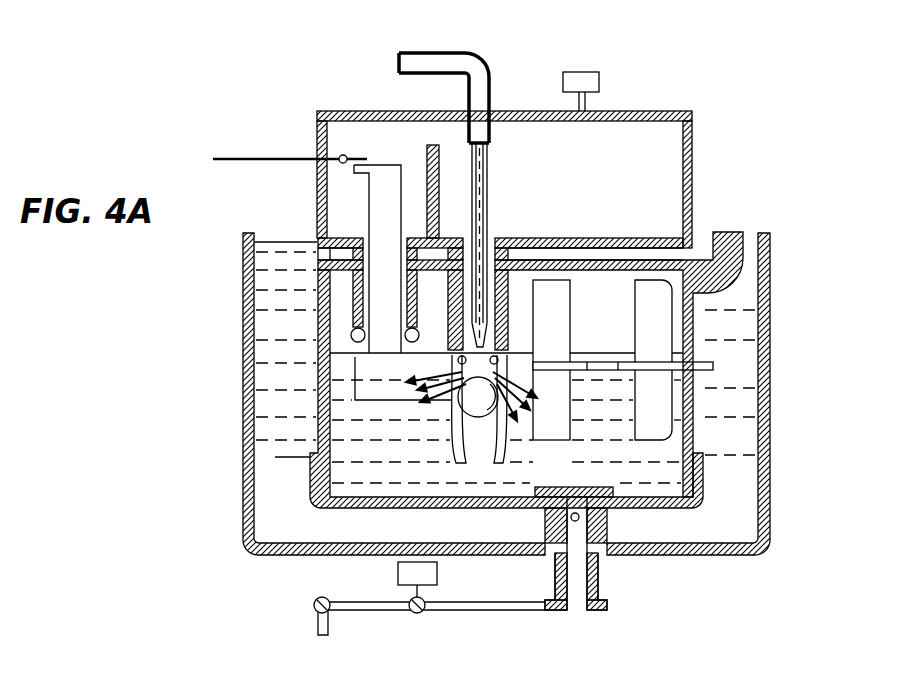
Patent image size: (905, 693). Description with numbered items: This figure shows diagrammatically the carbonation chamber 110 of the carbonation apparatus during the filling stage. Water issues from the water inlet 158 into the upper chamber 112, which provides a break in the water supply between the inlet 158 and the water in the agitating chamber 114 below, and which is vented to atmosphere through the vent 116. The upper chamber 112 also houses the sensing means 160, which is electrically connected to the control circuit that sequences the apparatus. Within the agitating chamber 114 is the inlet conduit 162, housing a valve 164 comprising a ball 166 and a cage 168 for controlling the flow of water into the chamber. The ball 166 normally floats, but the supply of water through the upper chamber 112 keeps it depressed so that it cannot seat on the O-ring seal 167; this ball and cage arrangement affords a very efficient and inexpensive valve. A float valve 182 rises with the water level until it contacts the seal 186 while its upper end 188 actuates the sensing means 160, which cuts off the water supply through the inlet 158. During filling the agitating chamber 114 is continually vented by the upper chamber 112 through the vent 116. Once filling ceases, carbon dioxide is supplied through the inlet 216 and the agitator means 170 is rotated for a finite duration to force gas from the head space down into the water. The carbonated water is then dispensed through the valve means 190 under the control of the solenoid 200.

The carbonation chamber 110 is at (709, 166).
The upper chamber 112 is at (638, 135).
The agitating chamber 114 is at (338, 337).
The vent 116 is at (583, 73).
The water inlet 158 is at (493, 128).
The sensing means 160 is at (268, 159).
The inlet conduit 162 is at (487, 218).
The valve 164 is at (520, 462).
The ball 166 is at (458, 400).
The O-ring seal 167 is at (530, 358).
The cage 168 is at (456, 450).
The agitator means 170 is at (658, 396).
The float valve 182 is at (355, 372).
The seal 186 is at (367, 333).
The upper end of float valve 188 is at (380, 165).
The valve means 190 is at (598, 575).
The solenoid 200 is at (398, 574).
The inlet 216 is at (722, 235).